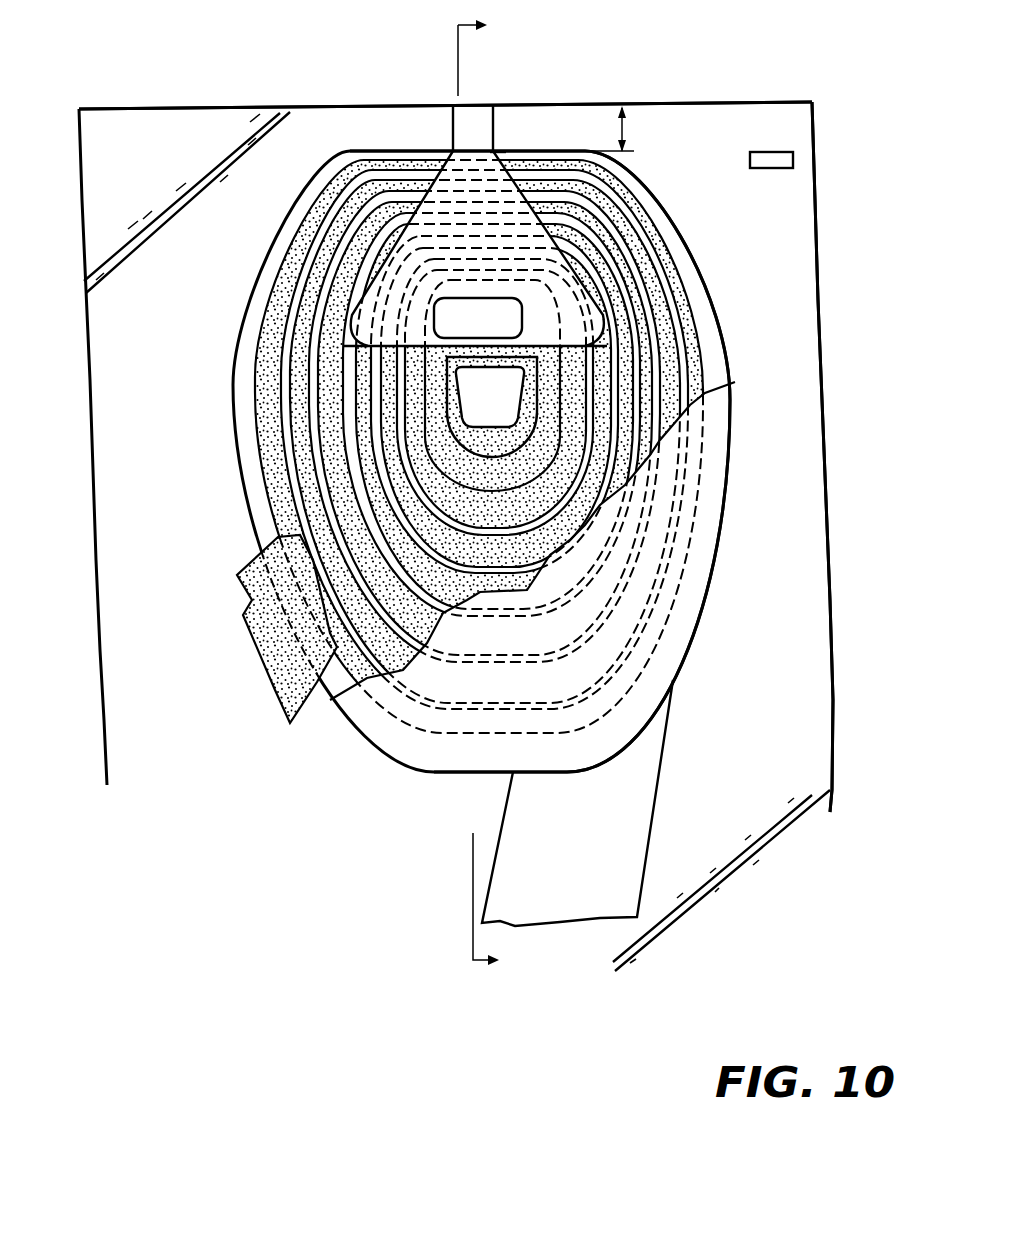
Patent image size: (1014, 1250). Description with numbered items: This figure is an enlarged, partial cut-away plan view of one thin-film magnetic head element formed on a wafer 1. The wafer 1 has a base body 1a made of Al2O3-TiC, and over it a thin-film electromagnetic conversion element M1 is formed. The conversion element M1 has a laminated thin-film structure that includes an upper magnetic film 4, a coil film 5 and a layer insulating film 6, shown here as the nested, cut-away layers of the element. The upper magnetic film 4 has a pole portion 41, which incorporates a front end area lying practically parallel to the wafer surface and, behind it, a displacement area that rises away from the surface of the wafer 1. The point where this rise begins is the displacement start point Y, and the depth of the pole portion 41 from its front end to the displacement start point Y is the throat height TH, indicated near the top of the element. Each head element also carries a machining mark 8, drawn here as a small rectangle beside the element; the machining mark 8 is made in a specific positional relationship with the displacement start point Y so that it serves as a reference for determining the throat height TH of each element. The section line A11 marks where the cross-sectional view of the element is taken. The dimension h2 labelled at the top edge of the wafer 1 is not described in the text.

The wafer 1 is at (104, 776).
The base body 1a is at (790, 512).
The upper magnetic film 4 is at (430, 208).
The pole portion 41 is at (460, 150).
The coil film 5 is at (297, 468).
The layer insulating film 6 is at (690, 270).
The machining mark 8 is at (777, 168).
The height h2 is at (213, 98).
The thin-film electromagnetic conversion element M1 is at (745, 352).
The displacement start point Y is at (509, 139).
The throat height TH is at (622, 127).
The section line A11- A11 is at (517, 493).